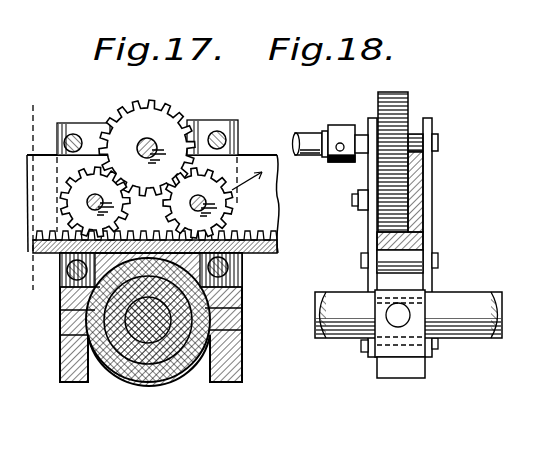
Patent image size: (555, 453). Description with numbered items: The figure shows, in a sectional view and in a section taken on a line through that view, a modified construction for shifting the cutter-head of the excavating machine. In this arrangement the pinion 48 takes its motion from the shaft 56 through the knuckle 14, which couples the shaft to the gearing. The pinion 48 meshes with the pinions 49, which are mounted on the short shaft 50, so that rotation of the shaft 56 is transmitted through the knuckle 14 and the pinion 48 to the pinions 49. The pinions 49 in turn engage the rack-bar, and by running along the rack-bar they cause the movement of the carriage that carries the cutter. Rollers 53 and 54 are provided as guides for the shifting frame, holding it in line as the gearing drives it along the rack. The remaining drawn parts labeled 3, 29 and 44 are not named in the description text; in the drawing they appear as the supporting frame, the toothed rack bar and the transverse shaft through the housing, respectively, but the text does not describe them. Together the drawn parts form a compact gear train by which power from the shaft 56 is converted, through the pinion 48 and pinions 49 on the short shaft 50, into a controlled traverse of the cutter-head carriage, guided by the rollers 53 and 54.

In FIG. 17, the frame 3 is at (153, 245).
In FIG. 18, the frame 3 is at (400, 237).
In FIG. 18, the knuckle 14 is at (337, 164).
In FIG. 17, the rack bar 29 is at (138, 167).
In FIG. 17, the shaft 44 is at (176, 352).
In FIG. 18, the shaft 44 is at (460, 300).
In FIG. 17, the pinion 48 is at (168, 118).
In FIG. 18, the pinion 48 is at (392, 95).
In FIG. 17, the pinions 49 is at (62, 205).
In FIG. 18, the pinions 49 is at (414, 168).
In FIG. 18, the short shaft 50 is at (354, 206).
In FIG. 17, the roller 53 is at (242, 271).
In FIG. 18, the roller 53 is at (412, 258).
In FIG. 17, the roller 54 is at (73, 132).
In FIG. 18, the roller 54 is at (413, 140).
In FIG. 18, the shaft 56 is at (309, 140).